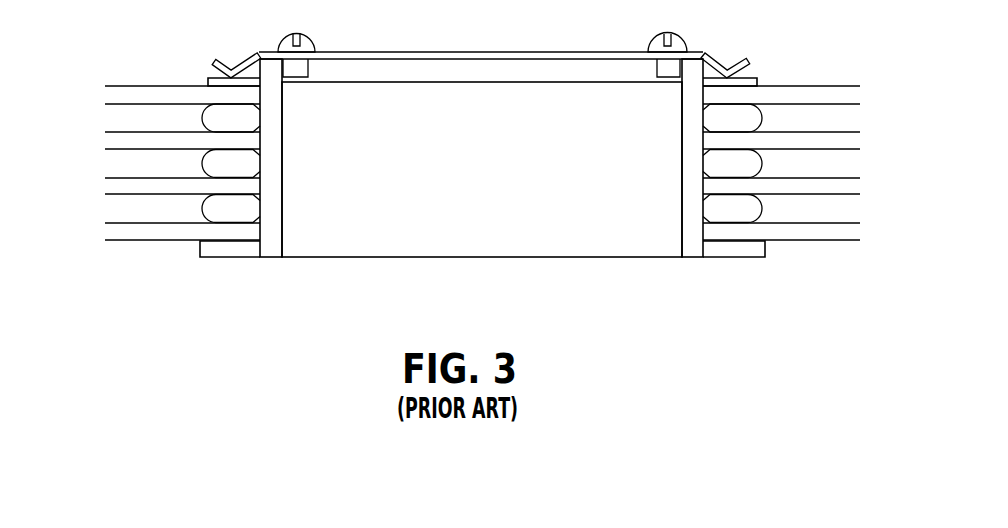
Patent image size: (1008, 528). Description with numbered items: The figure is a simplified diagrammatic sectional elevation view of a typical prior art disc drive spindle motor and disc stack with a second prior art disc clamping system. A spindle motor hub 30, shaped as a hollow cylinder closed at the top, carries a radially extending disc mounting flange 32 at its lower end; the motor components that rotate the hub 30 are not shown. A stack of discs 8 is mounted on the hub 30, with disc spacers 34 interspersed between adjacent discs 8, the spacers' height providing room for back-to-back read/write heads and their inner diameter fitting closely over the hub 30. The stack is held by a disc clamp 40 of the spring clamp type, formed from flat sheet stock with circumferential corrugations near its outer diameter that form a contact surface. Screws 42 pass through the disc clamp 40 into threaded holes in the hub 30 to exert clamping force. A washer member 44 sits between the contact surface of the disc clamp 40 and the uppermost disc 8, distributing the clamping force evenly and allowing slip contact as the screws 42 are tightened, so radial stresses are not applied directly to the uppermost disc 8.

The discs 8 is at (827, 235).
The hub 30 is at (427, 67).
The disc mounting flange 32 is at (720, 252).
The disc spacers 34 is at (225, 208).
The disc clamp 40 is at (257, 53).
The screws 42 is at (680, 45).
The washer member 44 is at (755, 78).